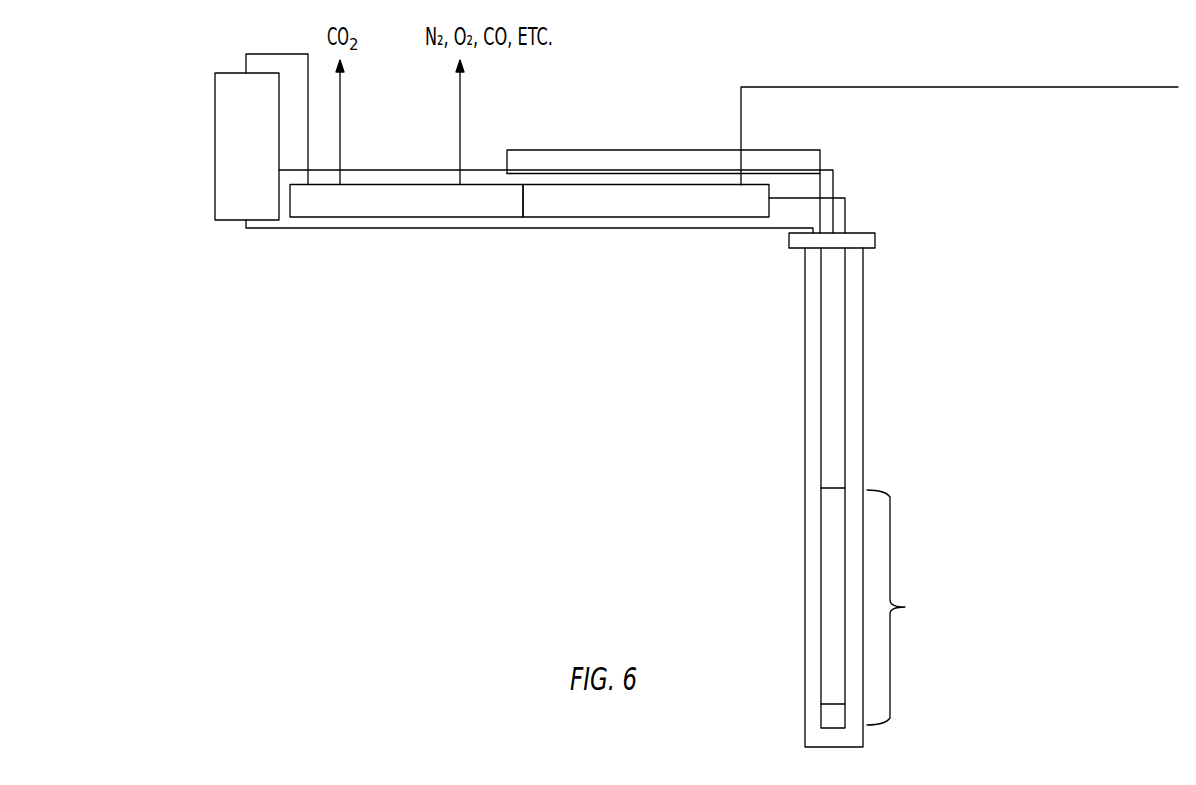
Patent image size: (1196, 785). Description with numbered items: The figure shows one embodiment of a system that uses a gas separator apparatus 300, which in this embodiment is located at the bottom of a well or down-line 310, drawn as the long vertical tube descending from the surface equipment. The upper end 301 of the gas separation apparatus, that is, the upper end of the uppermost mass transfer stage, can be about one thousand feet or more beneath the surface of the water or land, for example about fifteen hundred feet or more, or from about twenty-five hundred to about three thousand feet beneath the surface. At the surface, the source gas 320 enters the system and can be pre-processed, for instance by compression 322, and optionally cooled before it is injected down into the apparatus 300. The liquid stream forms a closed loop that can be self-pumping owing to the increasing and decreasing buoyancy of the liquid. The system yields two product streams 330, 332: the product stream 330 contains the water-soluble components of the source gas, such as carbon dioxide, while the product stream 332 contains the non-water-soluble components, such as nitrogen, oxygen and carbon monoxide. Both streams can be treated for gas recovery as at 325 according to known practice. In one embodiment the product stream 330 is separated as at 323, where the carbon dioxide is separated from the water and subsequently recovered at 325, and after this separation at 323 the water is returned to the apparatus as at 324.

The gas separator apparatus 300 is at (905, 607).
The upper end 301 is at (847, 488).
The well or down-line 310 is at (863, 317).
The source gas 320 is at (959, 119).
The compression 322 is at (563, 207).
The separation 323 is at (215, 173).
The water return 324 is at (834, 180).
The recovery 325 is at (323, 203).
The product stream 330 is at (457, 228).
The product stream 332 is at (820, 150).